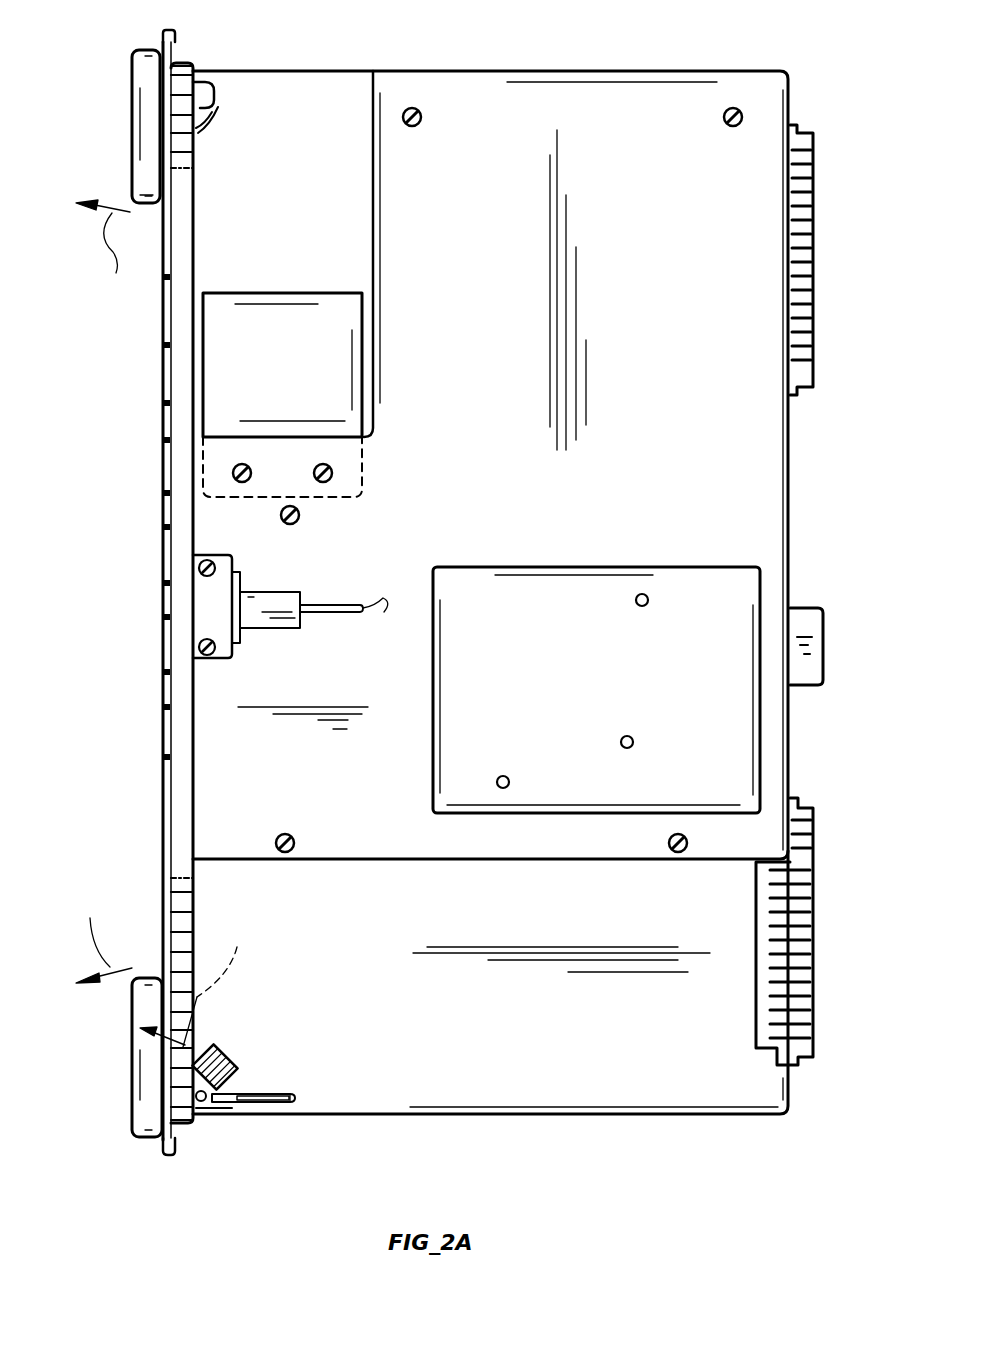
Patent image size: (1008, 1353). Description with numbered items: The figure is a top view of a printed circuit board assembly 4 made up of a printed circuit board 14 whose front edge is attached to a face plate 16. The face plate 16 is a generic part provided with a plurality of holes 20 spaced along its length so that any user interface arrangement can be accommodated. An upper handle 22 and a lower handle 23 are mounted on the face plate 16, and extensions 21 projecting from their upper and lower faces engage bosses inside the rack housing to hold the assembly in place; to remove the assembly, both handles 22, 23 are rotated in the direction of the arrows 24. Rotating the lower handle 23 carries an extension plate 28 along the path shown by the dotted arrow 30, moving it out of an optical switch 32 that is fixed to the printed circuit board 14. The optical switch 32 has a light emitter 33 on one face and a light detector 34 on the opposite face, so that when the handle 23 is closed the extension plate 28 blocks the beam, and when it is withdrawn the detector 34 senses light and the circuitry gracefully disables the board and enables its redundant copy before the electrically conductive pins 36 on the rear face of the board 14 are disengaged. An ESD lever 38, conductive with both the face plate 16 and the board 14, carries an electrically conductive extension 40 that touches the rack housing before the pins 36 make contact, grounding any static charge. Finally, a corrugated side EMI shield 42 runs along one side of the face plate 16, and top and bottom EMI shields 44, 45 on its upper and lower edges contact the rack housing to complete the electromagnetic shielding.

The printed circuit board assembly 4 is at (693, 1122).
The printed circuit board 14 is at (530, 1075).
The face plate 16 is at (163, 552).
The holes 20 is at (163, 757).
The extensions 21 is at (162, 38).
The upper handle 22 is at (140, 115).
The lower handle 23 is at (132, 1062).
The arrows 24 is at (102, 591).
The extension plate 28 is at (212, 122).
The dotted arrow 30 is at (221, 985).
The optical switch 32 is at (247, 1041).
The light emitter 33 is at (242, 1103).
The light detector 34 is at (237, 1060).
The electrically conductive pins 36 is at (815, 180).
The ESD lever 38 is at (300, 1098).
The electrically conductive extension 40 is at (265, 1097).
The corrugated side EMI shield 42 is at (185, 141).
The top EMI shield 44 is at (182, 65).
The bottom EMI shield 45 is at (188, 1127).